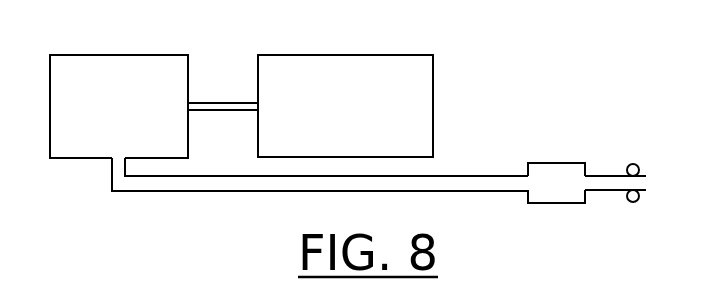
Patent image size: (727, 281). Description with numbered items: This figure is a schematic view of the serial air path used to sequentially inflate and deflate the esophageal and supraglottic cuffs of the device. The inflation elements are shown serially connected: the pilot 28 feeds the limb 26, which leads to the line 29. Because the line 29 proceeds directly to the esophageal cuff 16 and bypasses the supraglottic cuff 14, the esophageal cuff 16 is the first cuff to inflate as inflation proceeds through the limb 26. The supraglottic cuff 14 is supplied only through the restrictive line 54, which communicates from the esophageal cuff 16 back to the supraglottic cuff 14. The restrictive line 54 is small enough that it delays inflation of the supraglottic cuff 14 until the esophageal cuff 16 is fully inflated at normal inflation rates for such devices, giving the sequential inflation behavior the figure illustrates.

The esophageal cuff 16 is at (123, 62).
The supraglottic cuff 14 is at (365, 58).
The restrictive line 54 is at (212, 103).
The line 29 is at (187, 193).
The limb 26 is at (482, 191).
The pilot 28 is at (557, 163).